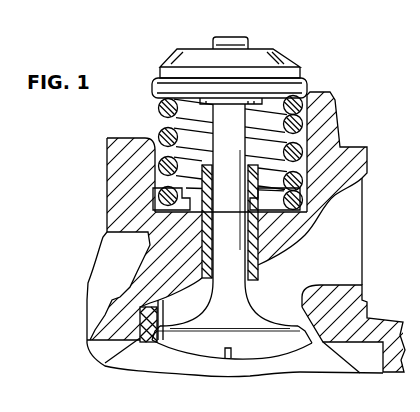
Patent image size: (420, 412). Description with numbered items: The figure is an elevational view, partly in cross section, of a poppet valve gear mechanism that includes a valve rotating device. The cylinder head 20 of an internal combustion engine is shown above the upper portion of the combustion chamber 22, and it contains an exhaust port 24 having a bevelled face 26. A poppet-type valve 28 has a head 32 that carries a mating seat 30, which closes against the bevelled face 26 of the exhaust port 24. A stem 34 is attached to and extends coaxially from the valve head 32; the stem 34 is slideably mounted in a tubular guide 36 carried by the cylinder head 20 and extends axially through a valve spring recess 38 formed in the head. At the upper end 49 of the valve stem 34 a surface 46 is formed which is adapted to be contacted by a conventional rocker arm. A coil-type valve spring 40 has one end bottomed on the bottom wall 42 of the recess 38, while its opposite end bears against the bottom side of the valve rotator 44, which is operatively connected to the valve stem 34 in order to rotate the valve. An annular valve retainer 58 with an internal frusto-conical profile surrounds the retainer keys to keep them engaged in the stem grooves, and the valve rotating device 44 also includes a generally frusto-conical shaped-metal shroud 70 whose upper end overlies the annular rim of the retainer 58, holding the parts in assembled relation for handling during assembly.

The cylinder head 20 is at (112, 289).
The upper portion of the combustion chamber 22 is at (372, 353).
The exhaust port 24 is at (343, 246).
The bevelled face 26 is at (163, 345).
The valve 28 is at (271, 358).
The seat 30 is at (205, 343).
The head 32 is at (228, 356).
The stem 34 is at (232, 252).
The tubular guide 36 is at (258, 270).
The valve spring recess 38 is at (311, 119).
The valve spring 40 is at (159, 107).
The bottom wall 42 is at (160, 198).
The valve rotator 44 is at (233, 62).
The surface 46 is at (230, 29).
The upper end 49 is at (213, 40).
The valve retainer 58 is at (232, 104).
The shroud 70 is at (290, 62).